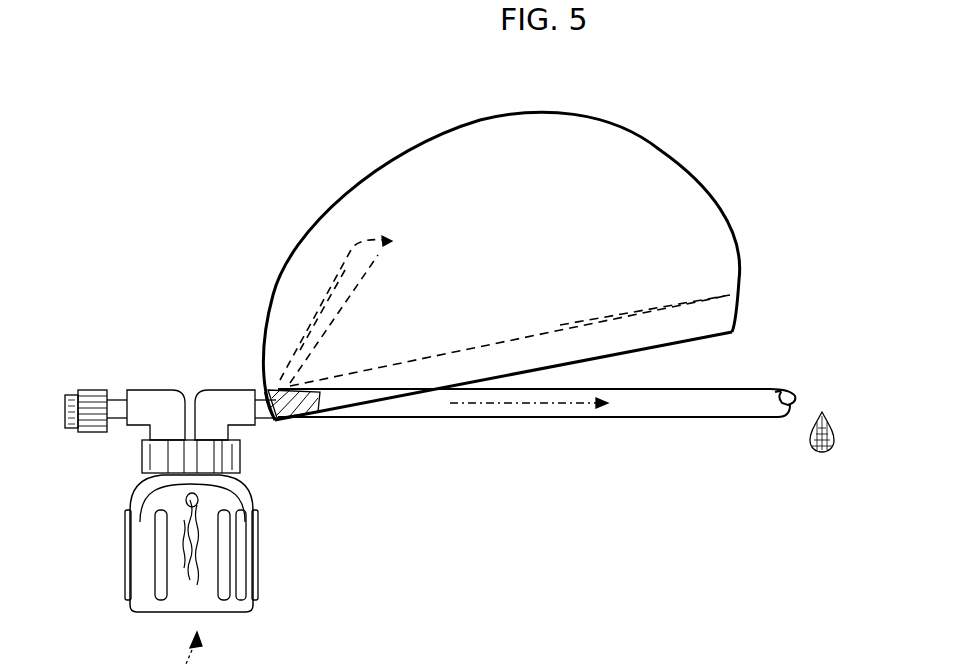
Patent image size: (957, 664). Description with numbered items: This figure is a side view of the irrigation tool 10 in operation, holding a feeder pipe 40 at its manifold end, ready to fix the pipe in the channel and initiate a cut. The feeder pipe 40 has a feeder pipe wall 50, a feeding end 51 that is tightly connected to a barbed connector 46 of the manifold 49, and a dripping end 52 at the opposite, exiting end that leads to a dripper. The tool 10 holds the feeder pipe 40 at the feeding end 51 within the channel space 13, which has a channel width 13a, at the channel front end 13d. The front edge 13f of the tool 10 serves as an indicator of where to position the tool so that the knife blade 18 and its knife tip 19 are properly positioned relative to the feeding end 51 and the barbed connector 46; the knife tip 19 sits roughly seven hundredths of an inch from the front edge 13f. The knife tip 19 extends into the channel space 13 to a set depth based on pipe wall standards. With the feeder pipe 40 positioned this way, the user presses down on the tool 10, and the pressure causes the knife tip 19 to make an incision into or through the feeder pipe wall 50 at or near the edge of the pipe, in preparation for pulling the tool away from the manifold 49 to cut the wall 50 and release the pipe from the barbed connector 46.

The irrigation tool 10 is at (270, 182).
The channel space 13 is at (519, 266).
The channel width 13a is at (714, 273).
The channel front end 13d is at (310, 295).
The front edge 13f is at (304, 462).
The knife blade 18 is at (323, 229).
The knife tip 19 is at (237, 345).
The barbed connector 46 is at (267, 387).
The feeder pipe 40 is at (536, 467).
The manifold 49 is at (197, 501).
The feeder pipe wall 50 is at (513, 486).
The feeding end 51 is at (419, 471).
The dripping end 52 is at (788, 471).